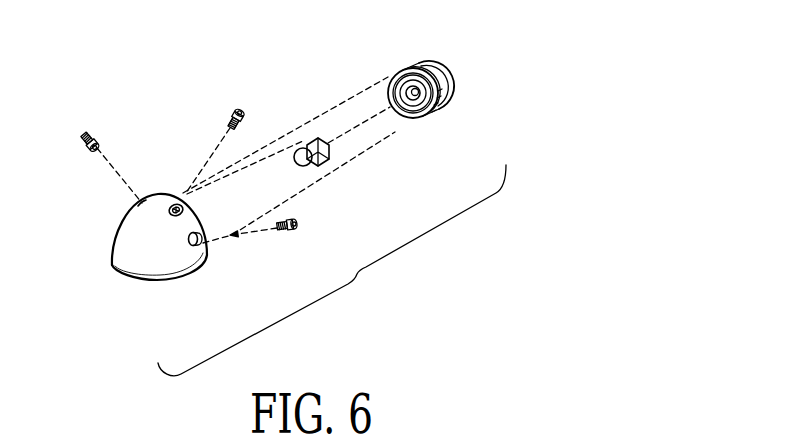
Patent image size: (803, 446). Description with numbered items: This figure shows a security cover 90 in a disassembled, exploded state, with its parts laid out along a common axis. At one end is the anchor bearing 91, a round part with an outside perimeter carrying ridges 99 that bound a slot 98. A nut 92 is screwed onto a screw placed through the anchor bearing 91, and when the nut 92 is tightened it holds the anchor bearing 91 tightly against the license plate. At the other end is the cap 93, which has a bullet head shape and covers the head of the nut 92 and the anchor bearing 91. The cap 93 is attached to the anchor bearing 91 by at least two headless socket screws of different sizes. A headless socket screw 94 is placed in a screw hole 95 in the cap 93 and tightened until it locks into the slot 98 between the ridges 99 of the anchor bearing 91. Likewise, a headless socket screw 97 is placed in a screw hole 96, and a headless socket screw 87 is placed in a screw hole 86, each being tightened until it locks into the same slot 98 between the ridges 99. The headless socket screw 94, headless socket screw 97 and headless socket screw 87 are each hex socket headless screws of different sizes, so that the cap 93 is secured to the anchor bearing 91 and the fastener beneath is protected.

The screw hole 86 is at (205, 246).
The headless socket screw 87 is at (287, 232).
The security cover 90 is at (332, 270).
The anchor bearing 91 is at (321, 123).
The nut 92 is at (330, 158).
The cap 93 is at (118, 250).
The headless socket screw 94 is at (229, 112).
The screw hole 95 is at (172, 206).
The screw hole 96 is at (142, 203).
The headless socket screw 97 is at (84, 137).
The slot 98 is at (436, 115).
The ridges 99 is at (399, 67).